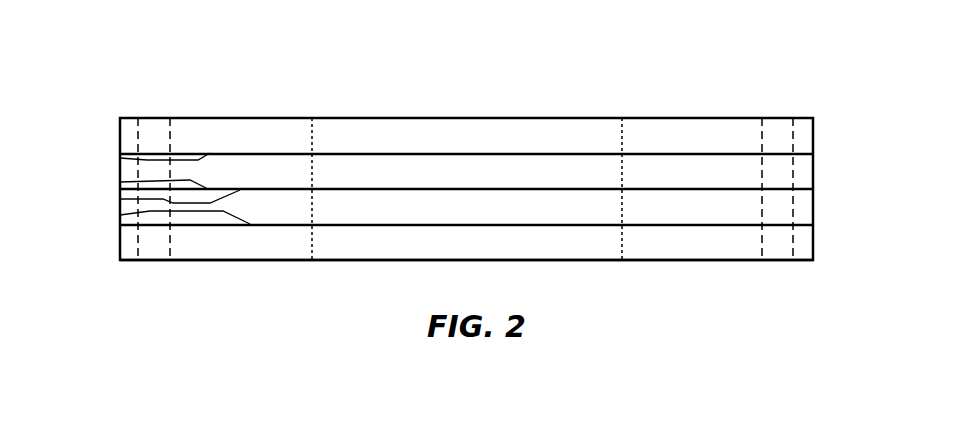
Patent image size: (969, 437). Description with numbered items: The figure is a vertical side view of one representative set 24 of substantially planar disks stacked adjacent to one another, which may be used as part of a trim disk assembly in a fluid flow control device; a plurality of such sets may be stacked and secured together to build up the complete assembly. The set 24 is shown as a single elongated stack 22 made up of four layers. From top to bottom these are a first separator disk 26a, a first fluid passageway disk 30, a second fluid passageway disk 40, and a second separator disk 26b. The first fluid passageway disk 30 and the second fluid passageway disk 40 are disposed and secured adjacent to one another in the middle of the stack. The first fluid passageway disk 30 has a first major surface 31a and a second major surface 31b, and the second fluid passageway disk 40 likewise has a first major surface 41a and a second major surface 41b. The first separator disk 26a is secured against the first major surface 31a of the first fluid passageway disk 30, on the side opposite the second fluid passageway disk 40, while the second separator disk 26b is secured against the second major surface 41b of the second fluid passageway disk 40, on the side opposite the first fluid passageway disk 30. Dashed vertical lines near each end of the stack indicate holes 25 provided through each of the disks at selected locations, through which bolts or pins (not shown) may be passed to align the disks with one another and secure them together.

The sensor body / stack 22 is at (488, 104).
The set of disks 24 is at (296, 55).
The holes 25 is at (160, 101).
The first separator disk 26a is at (803, 135).
The second separator disk 26b is at (805, 245).
The first fluid passageway disk 30 is at (805, 172).
The second fluid passageway disk 40 is at (805, 207).
The first major surface 31a is at (120, 158).
The second major surface 31b is at (120, 182).
The first major surface 41a is at (120, 199).
The second major surface 41b is at (120, 215).